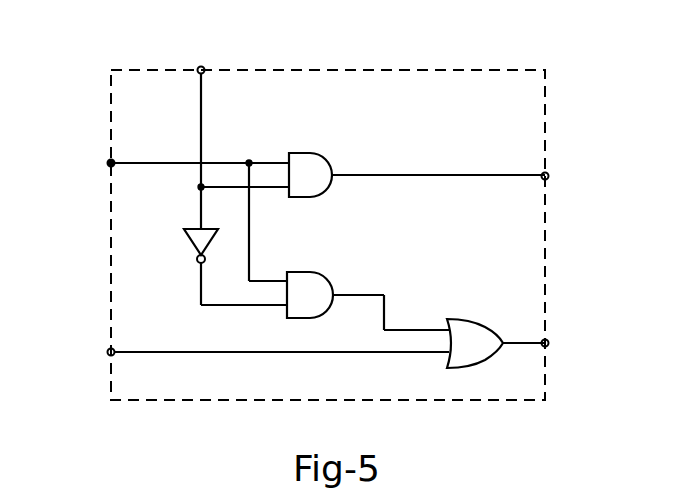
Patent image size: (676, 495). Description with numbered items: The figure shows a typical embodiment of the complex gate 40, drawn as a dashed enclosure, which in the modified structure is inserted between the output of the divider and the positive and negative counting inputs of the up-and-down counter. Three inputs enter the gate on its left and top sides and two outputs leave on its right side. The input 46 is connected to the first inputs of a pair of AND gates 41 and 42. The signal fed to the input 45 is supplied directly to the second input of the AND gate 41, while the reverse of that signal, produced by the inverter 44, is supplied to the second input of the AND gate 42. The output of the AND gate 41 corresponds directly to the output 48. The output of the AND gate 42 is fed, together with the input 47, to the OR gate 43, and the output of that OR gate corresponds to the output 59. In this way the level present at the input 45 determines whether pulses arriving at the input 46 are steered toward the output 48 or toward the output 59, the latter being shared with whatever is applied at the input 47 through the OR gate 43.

The complex gate 40 is at (468, 70).
The AND gate 41 is at (327, 152).
The AND gate 42 is at (323, 273).
The OR gate 43 is at (463, 318).
The inverter 44 is at (190, 238).
The input 45 is at (200, 66).
The input 46 is at (105, 165).
The input 47 is at (107, 354).
The output 48 is at (553, 172).
The output 59 is at (550, 341).